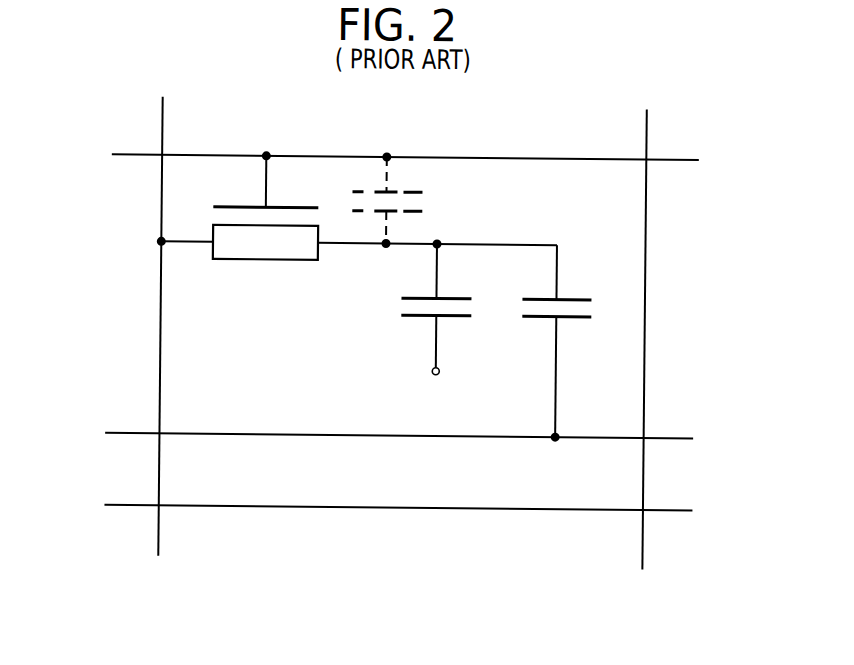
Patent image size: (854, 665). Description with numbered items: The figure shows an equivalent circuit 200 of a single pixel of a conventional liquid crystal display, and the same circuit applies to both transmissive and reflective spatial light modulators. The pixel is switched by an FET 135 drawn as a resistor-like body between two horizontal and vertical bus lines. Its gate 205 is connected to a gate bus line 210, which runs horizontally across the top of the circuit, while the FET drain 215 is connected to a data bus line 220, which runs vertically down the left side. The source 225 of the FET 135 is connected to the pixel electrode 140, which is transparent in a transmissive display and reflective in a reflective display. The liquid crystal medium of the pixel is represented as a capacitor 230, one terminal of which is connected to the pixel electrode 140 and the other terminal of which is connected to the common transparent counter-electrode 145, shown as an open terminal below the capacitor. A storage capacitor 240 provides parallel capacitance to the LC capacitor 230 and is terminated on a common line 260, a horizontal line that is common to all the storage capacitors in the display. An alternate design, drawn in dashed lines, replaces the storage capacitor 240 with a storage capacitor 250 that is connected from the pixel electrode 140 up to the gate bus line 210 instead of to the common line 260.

The equivalent circuit 200 is at (229, 594).
The gate bus line 210 is at (132, 157).
The data bus line 220 is at (161, 117).
The common line 260 is at (128, 436).
The gate 205 is at (266, 191).
The FET 135 is at (255, 261).
The FET drain 215 is at (182, 247).
The source 225 is at (352, 245).
The storage capacitor 250 is at (406, 193).
The pixel electrode 140 is at (440, 242).
The capacitor 230 is at (409, 318).
The common transparent counter-electrode 145 is at (433, 371).
The storage capacitor 240 is at (576, 295).